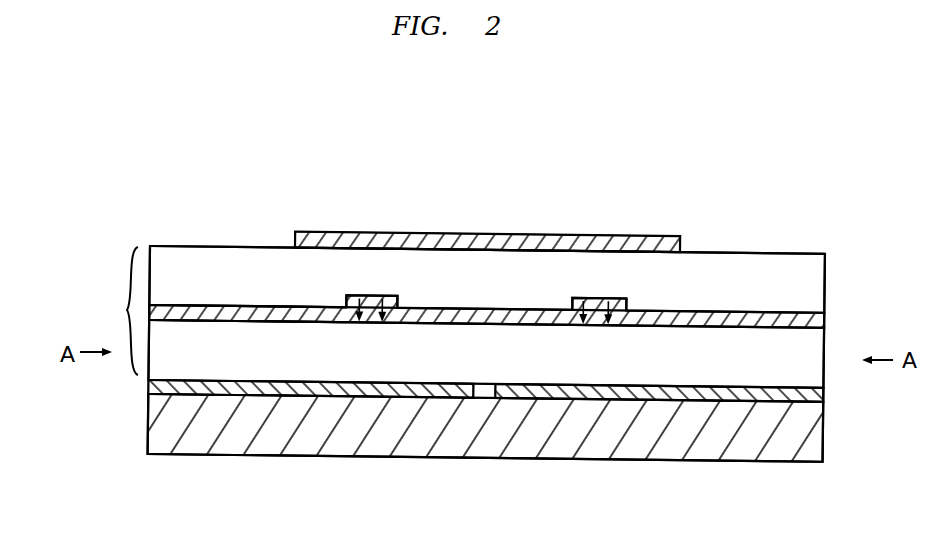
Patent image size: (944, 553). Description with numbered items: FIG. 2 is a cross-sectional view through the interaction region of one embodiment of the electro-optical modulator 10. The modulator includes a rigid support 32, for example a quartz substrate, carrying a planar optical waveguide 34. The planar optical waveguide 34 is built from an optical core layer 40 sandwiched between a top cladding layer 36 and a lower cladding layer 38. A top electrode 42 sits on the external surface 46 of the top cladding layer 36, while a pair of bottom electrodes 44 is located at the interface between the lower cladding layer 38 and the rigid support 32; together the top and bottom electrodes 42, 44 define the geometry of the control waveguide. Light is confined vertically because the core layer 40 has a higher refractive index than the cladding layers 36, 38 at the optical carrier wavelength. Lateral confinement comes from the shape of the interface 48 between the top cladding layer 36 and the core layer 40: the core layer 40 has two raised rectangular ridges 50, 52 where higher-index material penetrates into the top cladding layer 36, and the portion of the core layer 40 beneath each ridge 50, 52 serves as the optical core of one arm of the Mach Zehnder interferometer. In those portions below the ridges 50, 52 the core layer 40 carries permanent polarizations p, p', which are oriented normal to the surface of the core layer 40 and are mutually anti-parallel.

The electro-optical modulator 10 is at (254, 160).
The rigid support 32 is at (488, 460).
The planar optical waveguide 34 is at (116, 311).
The top cladding layer 36 is at (755, 296).
The lower cladding layer 38 is at (755, 370).
The optical core layer 40 is at (828, 318).
The top electrode 42 is at (473, 232).
The bottom electrodes 44 is at (150, 389).
The external surface 46 is at (768, 251).
The interface 48 is at (239, 304).
The raised rectangular ridge 50 is at (359, 293).
The raised rectangular ridge 52 is at (585, 297).
The permanent polarization p is at (383, 325).
The permanent polarization p' is at (612, 327).